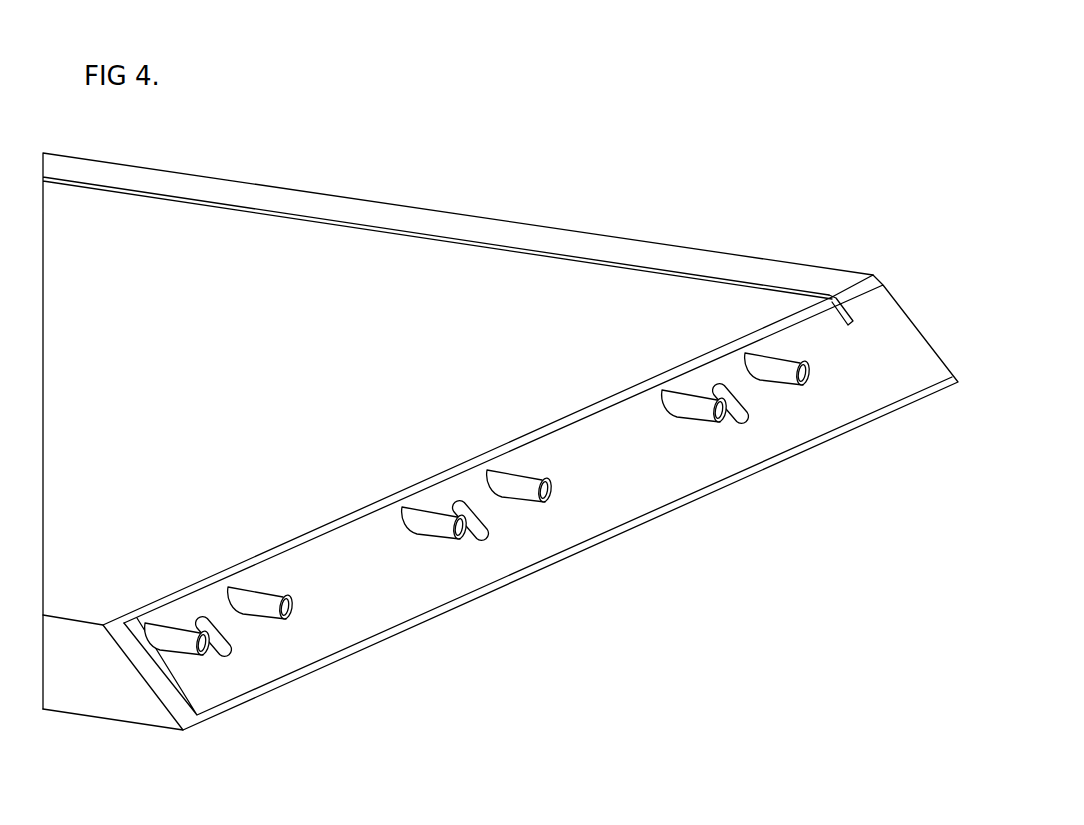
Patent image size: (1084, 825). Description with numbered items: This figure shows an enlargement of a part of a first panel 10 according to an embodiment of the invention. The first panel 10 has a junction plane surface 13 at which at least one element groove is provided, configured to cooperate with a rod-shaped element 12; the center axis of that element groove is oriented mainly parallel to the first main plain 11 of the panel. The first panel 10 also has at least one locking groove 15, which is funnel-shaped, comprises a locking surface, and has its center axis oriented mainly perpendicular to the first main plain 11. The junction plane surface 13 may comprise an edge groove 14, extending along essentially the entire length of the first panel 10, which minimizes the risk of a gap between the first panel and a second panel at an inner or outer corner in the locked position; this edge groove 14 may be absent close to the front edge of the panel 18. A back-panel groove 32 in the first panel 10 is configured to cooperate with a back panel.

The first panel 10 is at (508, 232).
The first main plain 11 is at (320, 275).
The rod-shaped element 12 is at (523, 490).
The first junction plane surface 13 is at (188, 720).
The edge groove 14 is at (695, 453).
The locking groove 15 is at (230, 642).
The front edge of the panel 18 is at (98, 687).
The back-panel groove 32 is at (776, 284).